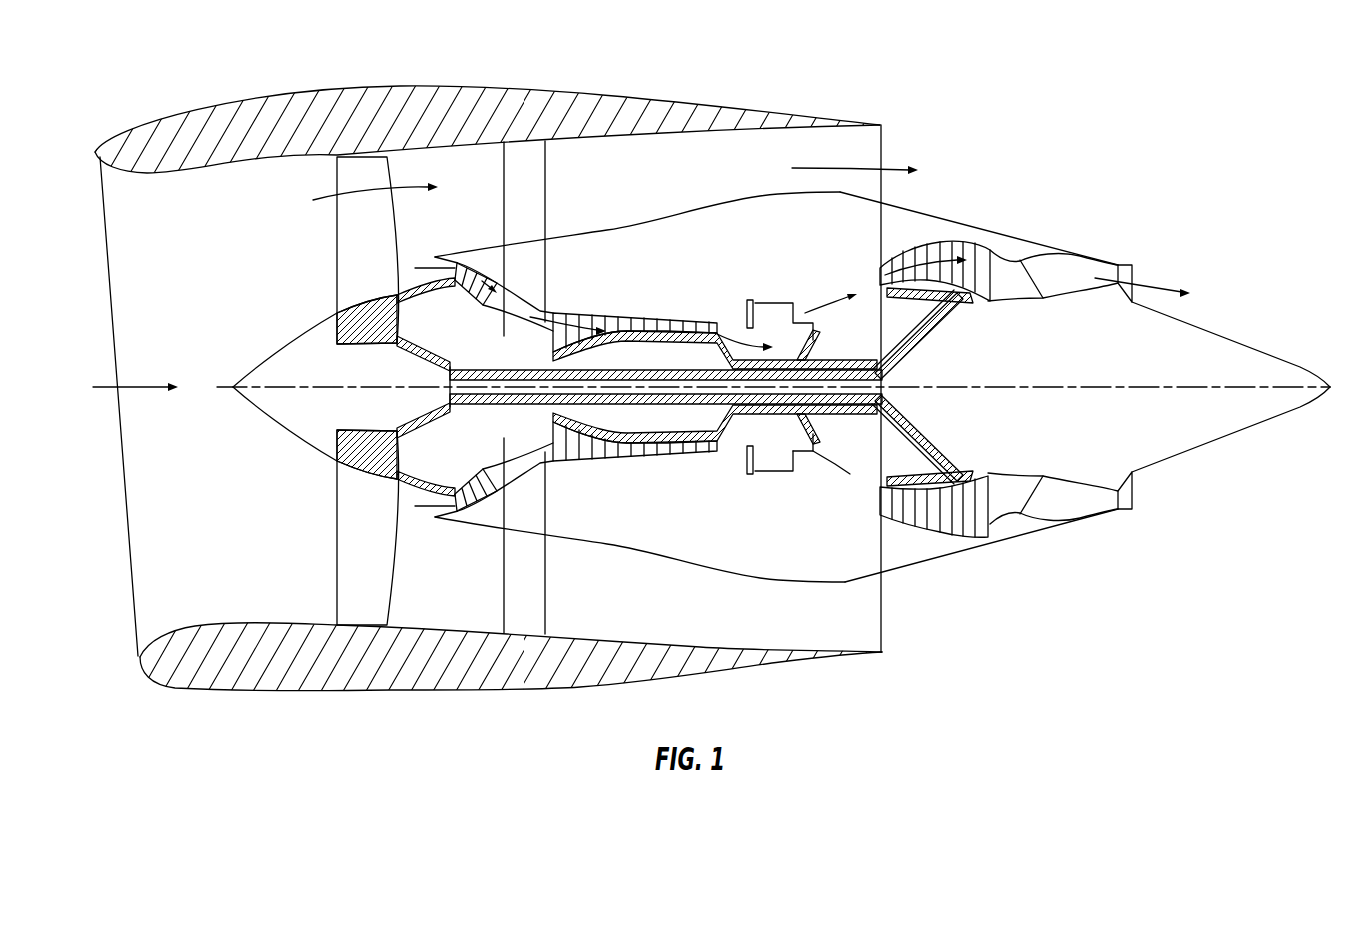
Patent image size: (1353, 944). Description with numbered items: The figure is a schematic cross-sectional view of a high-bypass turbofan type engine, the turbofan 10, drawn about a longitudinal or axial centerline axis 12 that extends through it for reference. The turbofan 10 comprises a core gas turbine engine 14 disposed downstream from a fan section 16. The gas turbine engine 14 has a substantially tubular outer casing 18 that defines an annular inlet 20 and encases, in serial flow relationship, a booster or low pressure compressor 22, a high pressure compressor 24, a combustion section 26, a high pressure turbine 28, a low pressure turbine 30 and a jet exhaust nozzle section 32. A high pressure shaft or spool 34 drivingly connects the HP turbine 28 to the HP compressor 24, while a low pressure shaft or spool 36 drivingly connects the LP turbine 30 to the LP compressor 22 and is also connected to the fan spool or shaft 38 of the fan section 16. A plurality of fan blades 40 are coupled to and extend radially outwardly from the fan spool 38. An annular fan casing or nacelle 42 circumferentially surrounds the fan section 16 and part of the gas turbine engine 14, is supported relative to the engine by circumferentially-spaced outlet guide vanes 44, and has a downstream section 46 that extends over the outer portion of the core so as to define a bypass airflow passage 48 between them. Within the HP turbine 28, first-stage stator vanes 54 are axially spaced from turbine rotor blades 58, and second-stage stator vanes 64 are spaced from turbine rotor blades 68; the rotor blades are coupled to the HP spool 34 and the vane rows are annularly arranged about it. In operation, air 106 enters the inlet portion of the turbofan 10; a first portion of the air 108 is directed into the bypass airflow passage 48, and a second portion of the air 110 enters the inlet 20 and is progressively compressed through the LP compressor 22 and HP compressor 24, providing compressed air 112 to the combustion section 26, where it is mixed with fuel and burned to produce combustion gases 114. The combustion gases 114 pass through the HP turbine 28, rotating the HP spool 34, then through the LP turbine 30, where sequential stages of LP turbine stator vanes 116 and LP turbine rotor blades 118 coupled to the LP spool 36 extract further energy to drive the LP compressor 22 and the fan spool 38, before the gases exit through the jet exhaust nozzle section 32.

The turbofan 10 is at (1040, 98).
The longitudinal or axial centerline axis 12 is at (1065, 384).
The gas turbine engine 14 is at (730, 270).
The fan section 16 is at (388, 70).
The outer casing 18 is at (720, 569).
The annular inlet 20 is at (445, 505).
The low pressure compressor 22 is at (492, 483).
The high pressure compressor 24 is at (577, 460).
The combustion section 26 is at (763, 470).
The high pressure turbine 28 is at (840, 456).
The low pressure turbine 30 is at (973, 540).
The jet exhaust nozzle section 32 is at (1133, 272).
The high pressure shaft or spool 34 is at (777, 358).
The low pressure shaft or spool 36 is at (507, 370).
The fan spool or shaft 38 is at (393, 347).
The fan blades 40 is at (337, 553).
The nacelle 42 is at (387, 689).
The outlet guide vanes 44 is at (545, 178).
The downstream section 46 is at (780, 103).
The bypass airflow passage 48 is at (684, 195).
The stator vanes 54 is at (770, 462).
The turbine rotor blades 58 is at (792, 477).
The stator vanes 64 is at (810, 475).
The turbine rotor blades 68 is at (827, 473).
The air 106 is at (125, 383).
The first portion of the air 108 is at (827, 165).
The second portion of the air 110 is at (427, 267).
The compressed air 112 is at (742, 307).
The combustion gases 114 is at (810, 316).
The LP turbine stator vanes 116 is at (881, 265).
The LP turbine rotor blades 118 is at (897, 256).